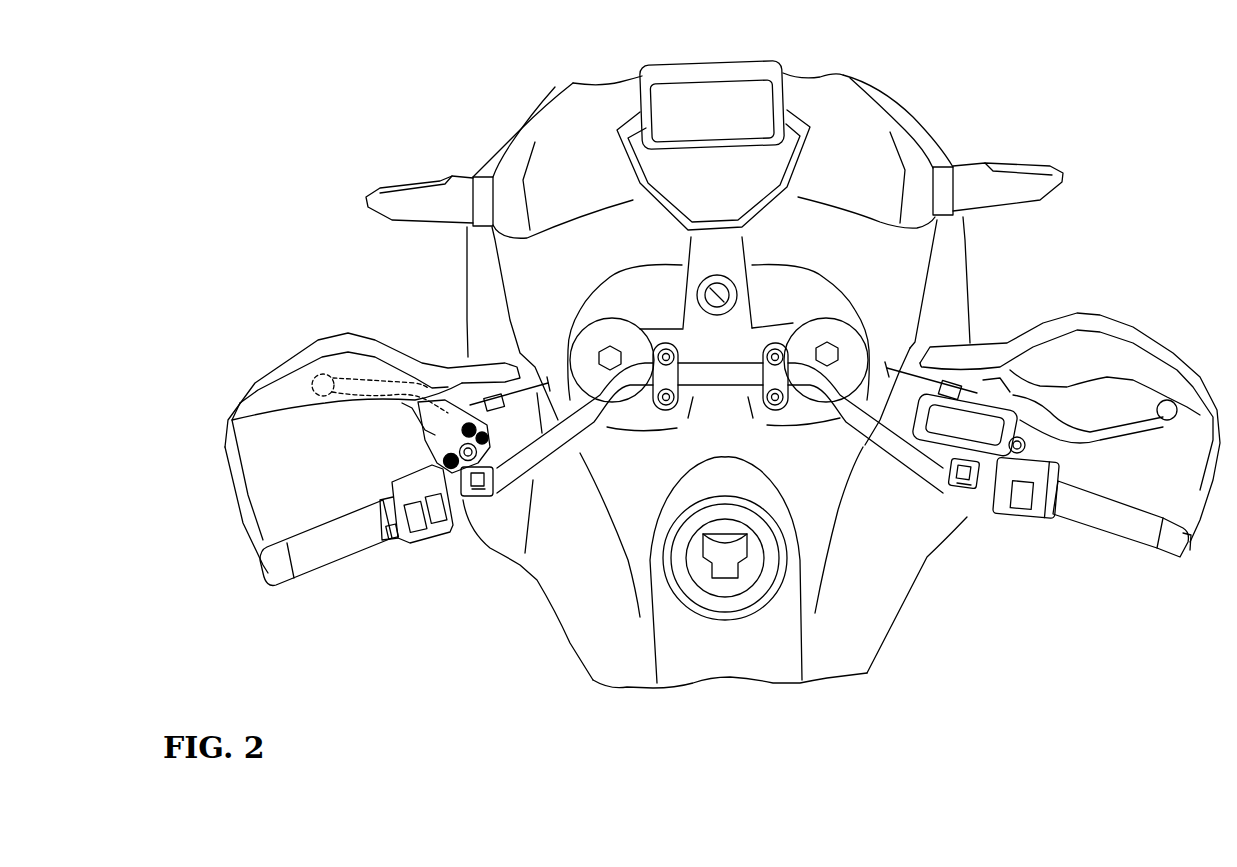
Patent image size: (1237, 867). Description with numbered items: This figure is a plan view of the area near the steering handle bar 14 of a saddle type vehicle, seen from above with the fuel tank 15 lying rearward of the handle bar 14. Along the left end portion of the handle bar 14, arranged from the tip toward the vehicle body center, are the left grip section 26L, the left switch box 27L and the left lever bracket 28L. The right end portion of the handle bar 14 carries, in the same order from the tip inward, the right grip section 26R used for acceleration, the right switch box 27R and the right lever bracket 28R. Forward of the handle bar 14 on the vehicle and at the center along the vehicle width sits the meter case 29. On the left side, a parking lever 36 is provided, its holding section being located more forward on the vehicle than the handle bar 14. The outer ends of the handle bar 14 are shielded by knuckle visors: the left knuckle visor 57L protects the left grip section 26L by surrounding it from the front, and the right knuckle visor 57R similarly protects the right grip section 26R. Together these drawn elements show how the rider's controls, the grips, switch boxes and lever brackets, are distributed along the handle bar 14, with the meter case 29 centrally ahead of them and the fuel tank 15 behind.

The handle bar 14 is at (553, 450).
The fuel tank 15 is at (733, 652).
The left grip section 26L is at (347, 540).
The right grip section 26R is at (1103, 520).
The left switch box 27L is at (420, 543).
The right switch box 27R is at (1027, 530).
The left lever bracket 28L is at (467, 503).
The right lever bracket 28R is at (978, 490).
The meter case 29 is at (640, 172).
The parking lever 36 is at (382, 400).
The left knuckle visor 57L is at (317, 353).
The right knuckle visor 57R is at (1120, 330).